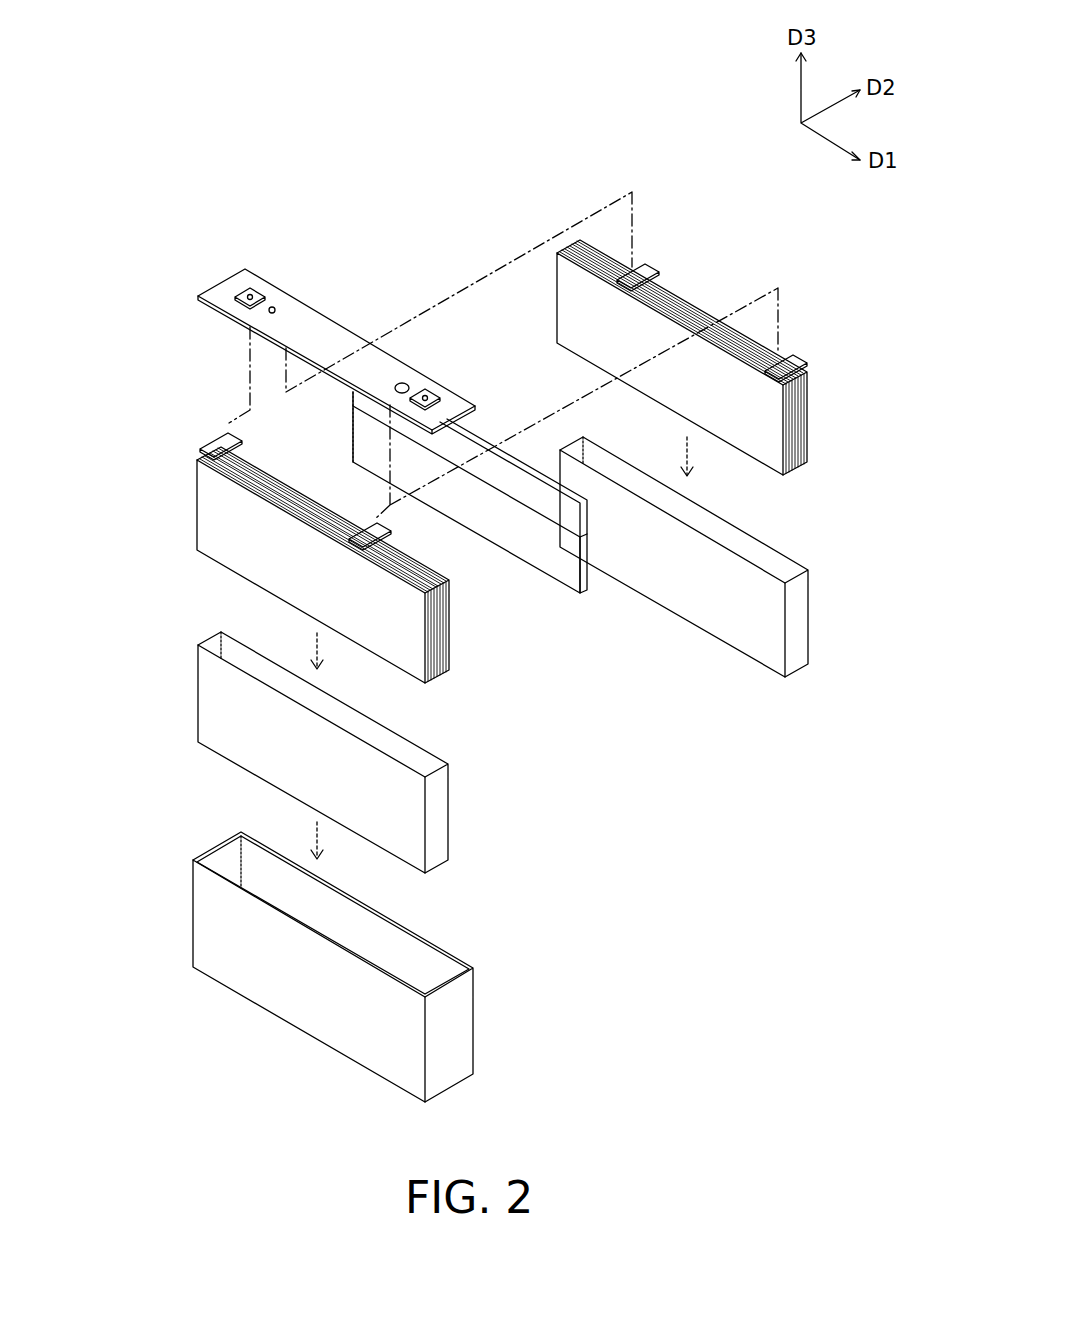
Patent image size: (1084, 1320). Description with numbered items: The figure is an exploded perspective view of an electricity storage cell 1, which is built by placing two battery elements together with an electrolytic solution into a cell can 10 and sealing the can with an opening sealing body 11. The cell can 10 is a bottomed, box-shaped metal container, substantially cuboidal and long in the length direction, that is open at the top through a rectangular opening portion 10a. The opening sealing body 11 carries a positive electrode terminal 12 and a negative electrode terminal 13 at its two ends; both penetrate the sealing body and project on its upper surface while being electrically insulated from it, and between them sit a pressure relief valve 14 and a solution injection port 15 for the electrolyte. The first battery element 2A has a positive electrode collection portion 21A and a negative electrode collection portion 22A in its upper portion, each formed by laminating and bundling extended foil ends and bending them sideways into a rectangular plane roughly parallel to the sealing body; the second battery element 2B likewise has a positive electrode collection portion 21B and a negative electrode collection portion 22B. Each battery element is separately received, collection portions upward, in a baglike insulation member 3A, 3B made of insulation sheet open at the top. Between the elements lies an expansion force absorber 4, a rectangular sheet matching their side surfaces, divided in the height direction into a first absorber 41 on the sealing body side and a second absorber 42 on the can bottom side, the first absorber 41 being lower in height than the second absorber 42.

The electricity storage cell 1 is at (467, 205).
The first battery element 2A is at (698, 332).
The second battery element 2B is at (276, 526).
The insulation member 3A is at (800, 608).
The insulation member 3B is at (440, 808).
The expansion force absorber 4 is at (470, 544).
The cell can 10 is at (364, 967).
The opening portion 10a is at (445, 948).
The opening sealing body 11 is at (351, 318).
The positive electrode terminal 12 is at (432, 396).
The negative electrode terminal 13 is at (252, 290).
The pressure relief valve 14 is at (408, 384).
The solution injection port 15 is at (274, 307).
The positive electrode collection portion 21A is at (790, 355).
The positive electrode collection portion 21B is at (368, 522).
The negative electrode collection portion 22A is at (641, 268).
The negative electrode collection portion 22B is at (208, 440).
The first absorber 41 is at (540, 497).
The second absorber 42 is at (570, 562).